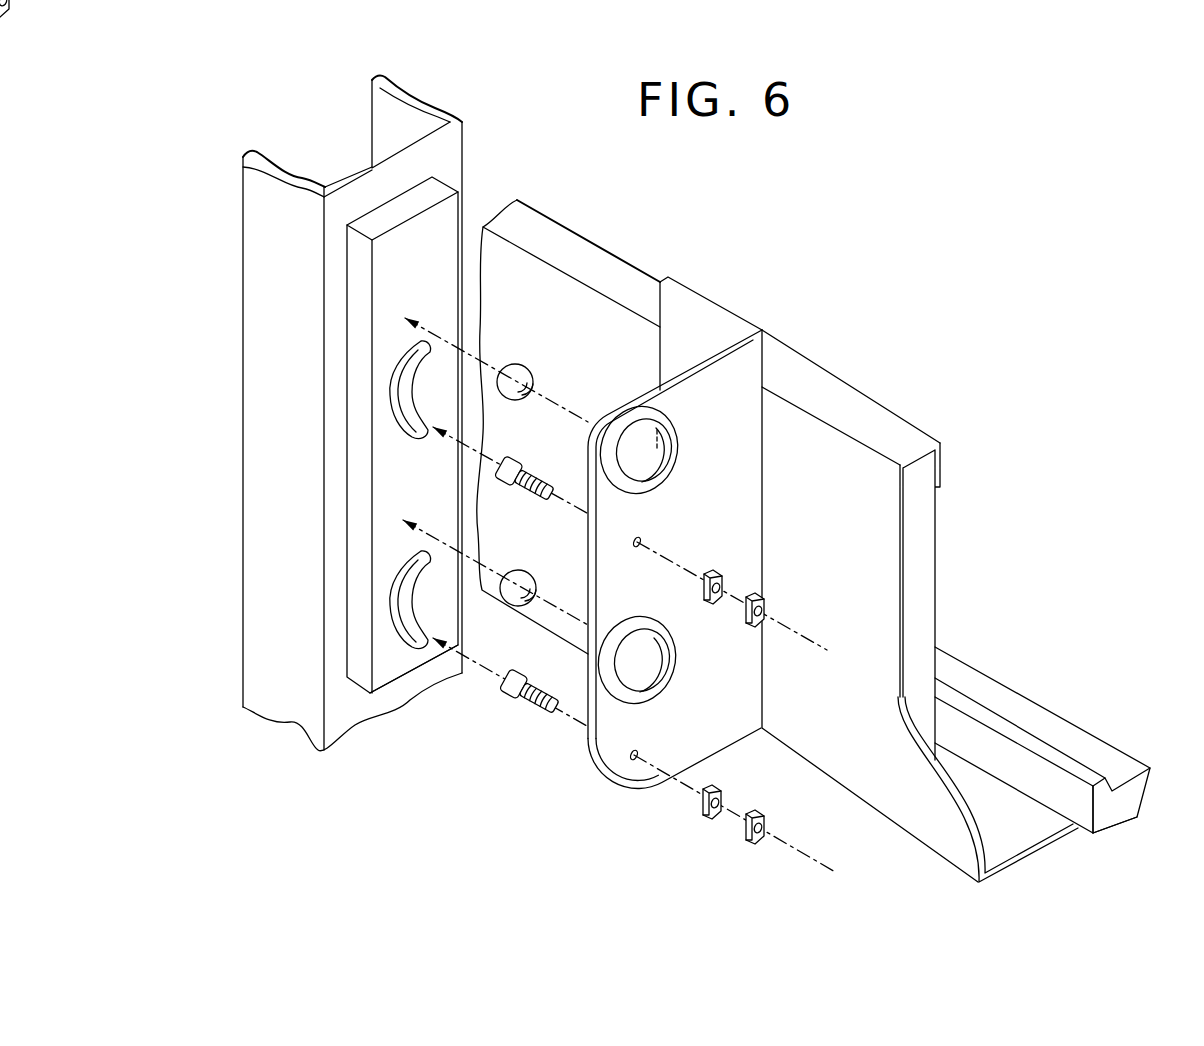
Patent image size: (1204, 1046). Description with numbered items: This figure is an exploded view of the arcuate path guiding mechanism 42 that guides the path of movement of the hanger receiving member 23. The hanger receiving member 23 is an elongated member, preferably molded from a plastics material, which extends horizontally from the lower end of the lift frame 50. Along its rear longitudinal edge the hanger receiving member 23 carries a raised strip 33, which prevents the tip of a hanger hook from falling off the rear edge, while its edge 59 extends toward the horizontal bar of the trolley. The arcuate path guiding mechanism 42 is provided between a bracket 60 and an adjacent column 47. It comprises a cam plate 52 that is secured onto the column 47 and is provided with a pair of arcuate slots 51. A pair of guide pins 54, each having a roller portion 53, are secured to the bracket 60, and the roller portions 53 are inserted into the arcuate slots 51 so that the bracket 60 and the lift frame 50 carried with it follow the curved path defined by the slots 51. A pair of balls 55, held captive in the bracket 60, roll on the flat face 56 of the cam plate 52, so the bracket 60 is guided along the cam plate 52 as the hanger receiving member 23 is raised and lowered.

The column 47 is at (464, 150).
The cam plate 52 is at (464, 220).
The arcuate path guiding mechanism 42 is at (424, 678).
The flat face 56 is at (397, 275).
The arcuate slot 51 is at (393, 417).
The lift frame 50 is at (938, 553).
The ball 55 is at (533, 375).
The roller portion 53 is at (520, 460).
The guide pin 54 is at (542, 498).
The bracket 60 is at (607, 773).
The hanger receiving member 23 is at (1043, 703).
The raised strip 33 is at (955, 698).
The edge 59 is at (1103, 735).